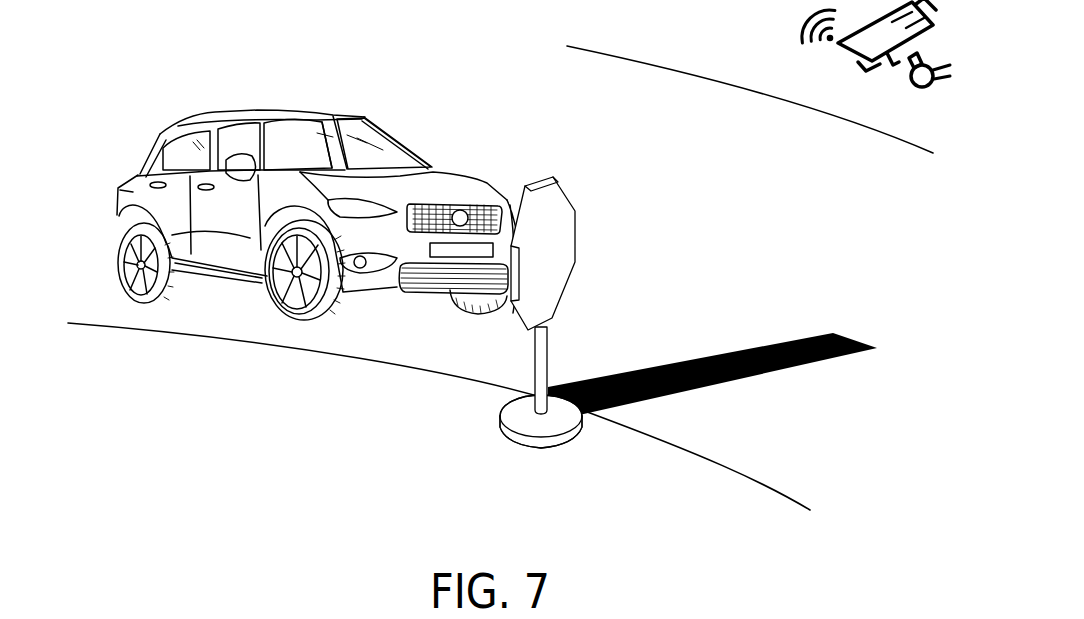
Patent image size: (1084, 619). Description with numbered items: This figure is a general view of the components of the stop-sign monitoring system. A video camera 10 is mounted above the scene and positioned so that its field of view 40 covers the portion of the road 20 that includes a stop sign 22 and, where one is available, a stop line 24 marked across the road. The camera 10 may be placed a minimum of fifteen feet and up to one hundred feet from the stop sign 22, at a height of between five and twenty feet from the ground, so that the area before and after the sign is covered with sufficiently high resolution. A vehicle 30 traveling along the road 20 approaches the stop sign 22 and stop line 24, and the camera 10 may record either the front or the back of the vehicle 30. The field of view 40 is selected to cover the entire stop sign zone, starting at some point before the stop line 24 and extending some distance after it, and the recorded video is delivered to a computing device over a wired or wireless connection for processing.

The video camera 10 is at (845, 52).
The road 20 is at (585, 122).
The stop sign 22 is at (500, 432).
The stop line 24 is at (860, 342).
The vehicle 30 is at (137, 175).
The field of view 40 is at (101, 618).